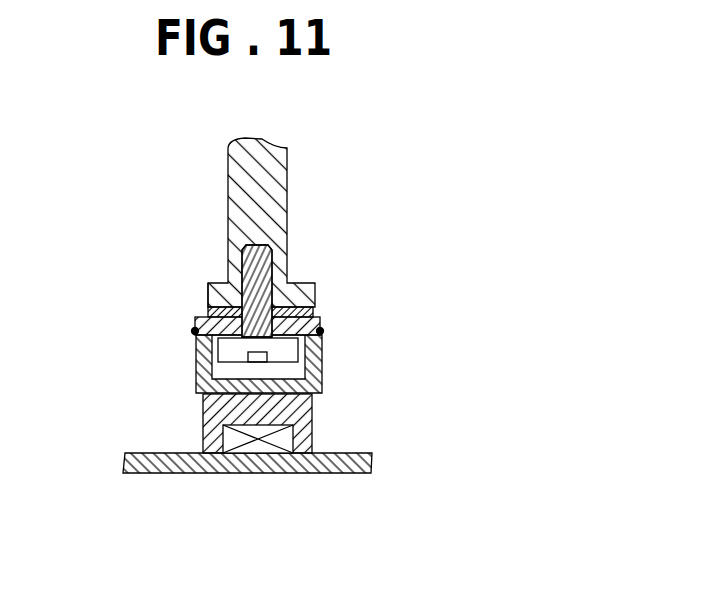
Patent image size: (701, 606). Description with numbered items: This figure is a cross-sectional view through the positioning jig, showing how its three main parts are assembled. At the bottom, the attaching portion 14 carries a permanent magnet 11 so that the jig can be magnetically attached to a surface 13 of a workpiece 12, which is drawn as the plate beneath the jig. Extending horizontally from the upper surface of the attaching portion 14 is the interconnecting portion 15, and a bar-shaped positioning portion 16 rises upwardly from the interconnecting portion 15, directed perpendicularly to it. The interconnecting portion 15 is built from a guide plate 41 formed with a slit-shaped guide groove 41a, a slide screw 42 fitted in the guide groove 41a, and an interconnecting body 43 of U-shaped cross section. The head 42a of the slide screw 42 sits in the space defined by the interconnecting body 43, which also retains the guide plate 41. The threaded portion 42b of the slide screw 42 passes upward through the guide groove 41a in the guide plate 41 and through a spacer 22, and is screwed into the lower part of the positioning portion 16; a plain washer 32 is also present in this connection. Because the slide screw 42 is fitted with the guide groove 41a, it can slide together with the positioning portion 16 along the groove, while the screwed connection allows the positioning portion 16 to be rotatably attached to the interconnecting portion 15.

The permanent magnet 11 is at (273, 443).
The workpiece 12 is at (352, 463).
The surface 13 is at (126, 432).
The attaching portion 14 is at (203, 412).
The interconnecting portion 15 is at (128, 292).
The positioning portion 16 is at (275, 183).
The spacer 22 is at (320, 312).
The plain washer 32 is at (197, 343).
The guide plate 41 is at (318, 324).
The guide groove 41a is at (314, 292).
The slide screw 42 is at (262, 246).
The head 42a is at (303, 353).
The threaded portion 42b is at (213, 283).
The interconnecting body 43 is at (320, 382).